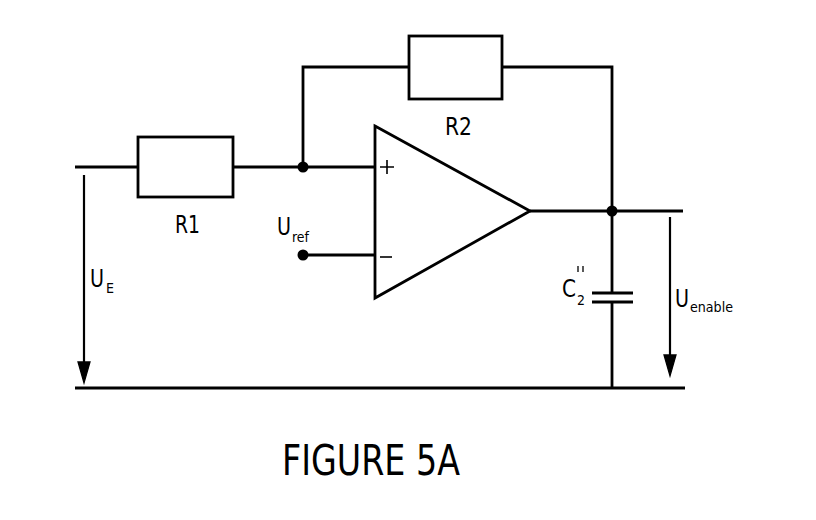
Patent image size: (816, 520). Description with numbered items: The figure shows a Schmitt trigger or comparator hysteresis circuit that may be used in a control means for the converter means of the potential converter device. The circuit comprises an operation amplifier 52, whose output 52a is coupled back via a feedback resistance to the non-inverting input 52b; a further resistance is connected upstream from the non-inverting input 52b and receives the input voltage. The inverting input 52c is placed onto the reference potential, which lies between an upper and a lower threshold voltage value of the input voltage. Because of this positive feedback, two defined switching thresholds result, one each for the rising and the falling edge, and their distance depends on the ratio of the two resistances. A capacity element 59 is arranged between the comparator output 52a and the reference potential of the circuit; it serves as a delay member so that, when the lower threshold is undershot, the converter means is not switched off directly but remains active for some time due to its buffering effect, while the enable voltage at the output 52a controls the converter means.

The operation amplifier 52 is at (467, 196).
The output of the operation amplifier 52a is at (533, 211).
The non-inverting input 52b is at (375, 161).
The inverting input 52c is at (375, 263).
The capacity element 59 is at (597, 306).